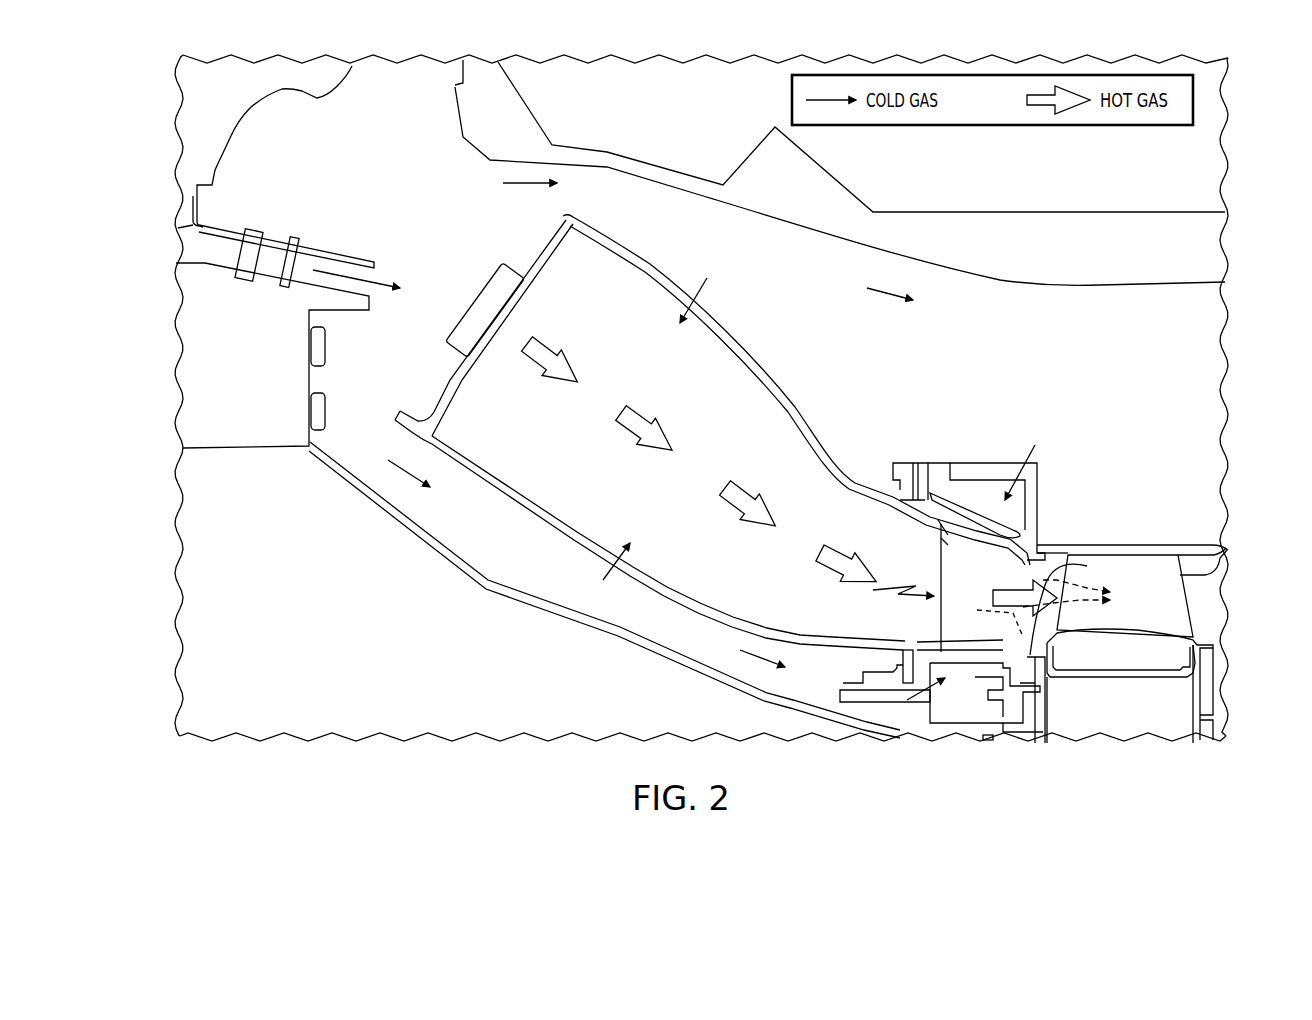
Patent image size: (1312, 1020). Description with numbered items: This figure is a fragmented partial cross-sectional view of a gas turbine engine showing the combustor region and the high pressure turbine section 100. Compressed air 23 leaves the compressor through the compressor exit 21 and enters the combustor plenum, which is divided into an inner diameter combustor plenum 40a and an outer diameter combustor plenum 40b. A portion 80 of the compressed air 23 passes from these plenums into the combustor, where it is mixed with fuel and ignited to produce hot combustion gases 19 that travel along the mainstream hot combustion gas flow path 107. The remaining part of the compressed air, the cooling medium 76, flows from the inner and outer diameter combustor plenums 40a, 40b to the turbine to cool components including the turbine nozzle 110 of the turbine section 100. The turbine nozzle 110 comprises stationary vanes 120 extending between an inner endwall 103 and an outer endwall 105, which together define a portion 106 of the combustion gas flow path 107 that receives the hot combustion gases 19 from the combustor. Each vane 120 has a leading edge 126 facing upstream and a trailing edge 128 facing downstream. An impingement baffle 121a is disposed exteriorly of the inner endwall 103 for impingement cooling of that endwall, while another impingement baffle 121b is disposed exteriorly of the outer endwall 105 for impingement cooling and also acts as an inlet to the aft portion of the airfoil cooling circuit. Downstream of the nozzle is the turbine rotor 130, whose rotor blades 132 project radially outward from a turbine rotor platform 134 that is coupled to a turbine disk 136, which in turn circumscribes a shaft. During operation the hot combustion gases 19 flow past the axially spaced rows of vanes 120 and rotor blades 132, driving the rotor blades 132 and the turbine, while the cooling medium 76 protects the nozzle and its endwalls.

The hot combustion gases 19 is at (545, 346).
The compressor exit 21 is at (359, 255).
The compressed air 23 is at (521, 183).
The inner diameter combustor plenum 40a is at (535, 552).
The outer diameter combustor plenum 40b is at (762, 291).
The cooling medium 76 is at (885, 294).
The portion of the compressed air 80 is at (702, 287).
The turbine section 100 is at (1228, 780).
The inner endwall 103 is at (973, 637).
The outer endwall 105 is at (944, 540).
The portion of the combustion gas flow path 106 is at (1043, 623).
The mainstream hot combustion gas flow path 107 is at (636, 504).
The turbine nozzle 110 is at (884, 597).
The vanes 120 is at (948, 592).
The impingement baffle 121a is at (965, 660).
The impingement baffle 121b is at (950, 492).
The leading edge 126 is at (940, 530).
The trailing edge 128 is at (1076, 605).
The turbine rotor 130 is at (1192, 602).
The rotor blades 132 is at (1228, 550).
The turbine rotor platform 134 is at (1212, 645).
The turbine disk 136 is at (1140, 722).